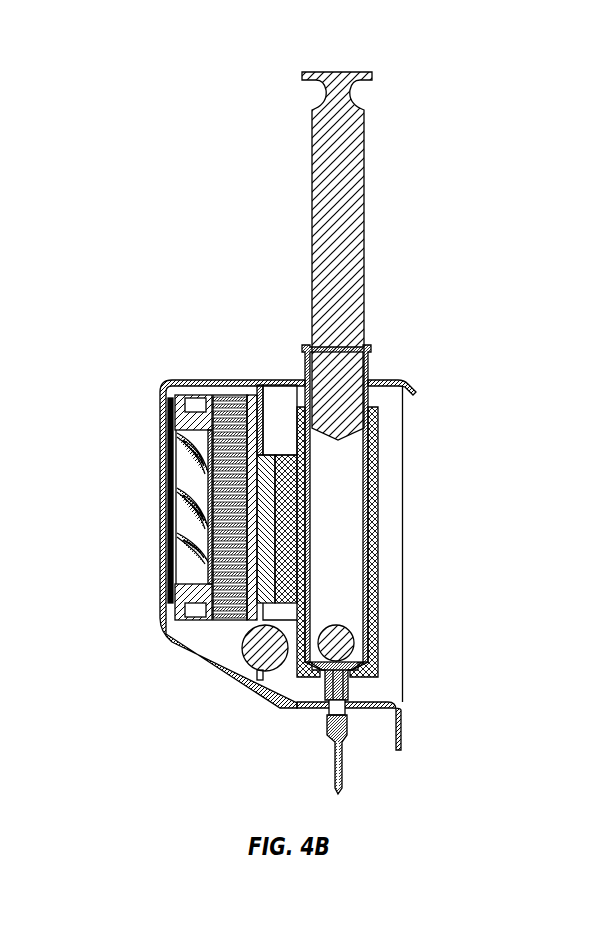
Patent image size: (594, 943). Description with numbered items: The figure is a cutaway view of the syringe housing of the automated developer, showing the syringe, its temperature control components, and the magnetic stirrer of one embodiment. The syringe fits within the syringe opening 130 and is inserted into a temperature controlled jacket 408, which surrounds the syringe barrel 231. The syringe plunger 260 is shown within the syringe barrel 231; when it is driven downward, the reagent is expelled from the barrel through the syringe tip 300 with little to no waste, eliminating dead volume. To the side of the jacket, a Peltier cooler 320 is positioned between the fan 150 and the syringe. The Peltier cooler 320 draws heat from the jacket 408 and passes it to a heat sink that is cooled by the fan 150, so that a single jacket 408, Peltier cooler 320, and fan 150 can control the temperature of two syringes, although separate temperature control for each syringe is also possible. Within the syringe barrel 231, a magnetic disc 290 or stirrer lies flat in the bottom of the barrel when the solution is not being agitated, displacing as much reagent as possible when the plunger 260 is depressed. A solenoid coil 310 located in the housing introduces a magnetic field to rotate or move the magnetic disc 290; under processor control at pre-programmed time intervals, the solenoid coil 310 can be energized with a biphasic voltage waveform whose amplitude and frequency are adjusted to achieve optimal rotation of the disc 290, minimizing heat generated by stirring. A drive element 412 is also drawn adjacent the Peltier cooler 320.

The fan 150 is at (163, 497).
The Peltier cooler 320 is at (215, 487).
The drive stack 412 is at (226, 402).
The temperature controlled jacket 408 is at (376, 497).
The syringe opening 130 is at (373, 370).
The syringe barrel 231 is at (340, 580).
The syringe plunger 260 is at (371, 150).
The magnetic disc 290 is at (345, 645).
The solenoid coil 310 is at (248, 655).
The syringe tip 300 is at (336, 772).